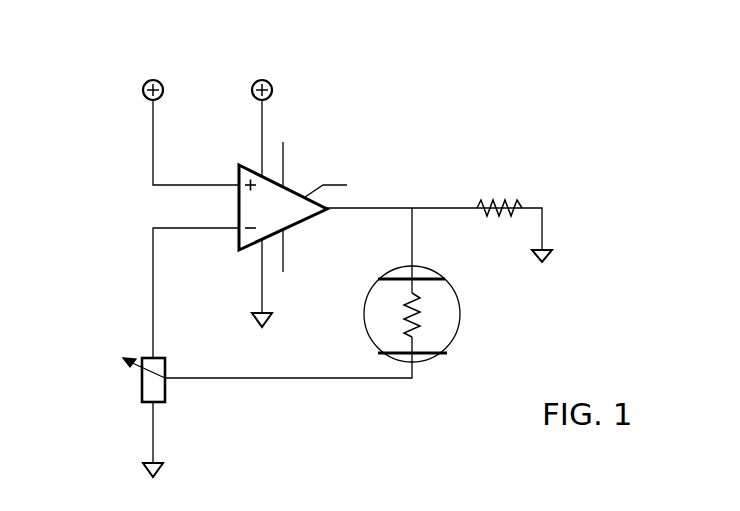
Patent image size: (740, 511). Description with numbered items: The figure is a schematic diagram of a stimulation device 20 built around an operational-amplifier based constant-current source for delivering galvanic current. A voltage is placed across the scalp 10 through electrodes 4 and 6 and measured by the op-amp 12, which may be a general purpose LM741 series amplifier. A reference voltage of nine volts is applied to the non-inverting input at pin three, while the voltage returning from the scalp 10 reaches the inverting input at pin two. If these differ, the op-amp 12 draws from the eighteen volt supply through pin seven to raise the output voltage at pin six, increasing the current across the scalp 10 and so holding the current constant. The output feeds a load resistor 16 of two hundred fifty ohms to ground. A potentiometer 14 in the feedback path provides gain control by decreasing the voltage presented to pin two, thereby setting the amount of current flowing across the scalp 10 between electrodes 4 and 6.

The stimulation device 20 is at (382, 68).
The op-amp 12 is at (285, 188).
The load resistor 16 is at (507, 198).
The potentiometer 14 is at (148, 383).
The scalp 10 is at (452, 320).
The electrode 6 is at (402, 277).
The electrode 4 is at (413, 353).